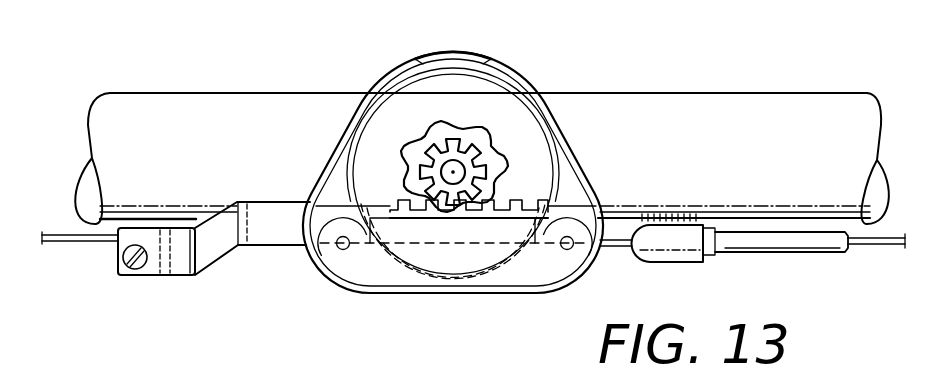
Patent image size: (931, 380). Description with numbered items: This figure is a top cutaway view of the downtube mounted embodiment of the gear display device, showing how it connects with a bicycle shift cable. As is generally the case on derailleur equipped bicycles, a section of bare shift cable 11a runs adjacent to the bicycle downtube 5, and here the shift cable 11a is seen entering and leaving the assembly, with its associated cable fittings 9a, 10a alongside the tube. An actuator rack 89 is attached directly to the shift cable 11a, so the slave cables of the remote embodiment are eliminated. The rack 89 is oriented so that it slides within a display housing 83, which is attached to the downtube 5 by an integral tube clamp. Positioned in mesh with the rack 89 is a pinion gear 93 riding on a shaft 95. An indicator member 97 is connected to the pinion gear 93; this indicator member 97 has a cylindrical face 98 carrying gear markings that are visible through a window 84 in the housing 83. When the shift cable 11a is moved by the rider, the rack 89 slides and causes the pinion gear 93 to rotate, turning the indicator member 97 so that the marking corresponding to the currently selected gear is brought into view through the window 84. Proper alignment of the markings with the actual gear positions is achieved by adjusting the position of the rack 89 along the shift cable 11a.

The downtube 5 is at (653, 107).
The display housing 83 is at (366, 293).
The window 84 is at (424, 42).
The cylindrical face 98 is at (415, 62).
The indicator member 97 is at (440, 95).
The pinion gear 93 is at (468, 152).
The shaft 95 is at (432, 166).
The actuator rack 89 is at (262, 235).
The cable connector 10a is at (666, 238).
The cable sheath 9a is at (765, 244).
The shift cable 11a is at (82, 247).